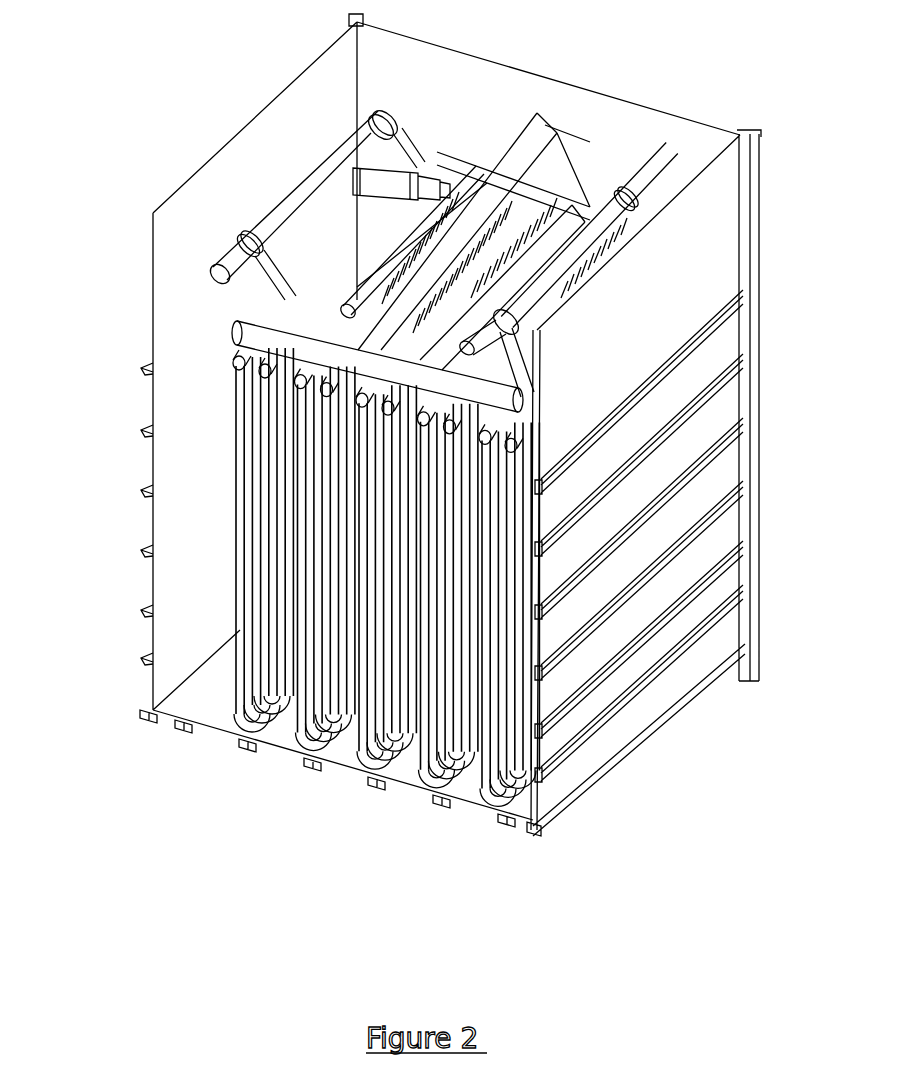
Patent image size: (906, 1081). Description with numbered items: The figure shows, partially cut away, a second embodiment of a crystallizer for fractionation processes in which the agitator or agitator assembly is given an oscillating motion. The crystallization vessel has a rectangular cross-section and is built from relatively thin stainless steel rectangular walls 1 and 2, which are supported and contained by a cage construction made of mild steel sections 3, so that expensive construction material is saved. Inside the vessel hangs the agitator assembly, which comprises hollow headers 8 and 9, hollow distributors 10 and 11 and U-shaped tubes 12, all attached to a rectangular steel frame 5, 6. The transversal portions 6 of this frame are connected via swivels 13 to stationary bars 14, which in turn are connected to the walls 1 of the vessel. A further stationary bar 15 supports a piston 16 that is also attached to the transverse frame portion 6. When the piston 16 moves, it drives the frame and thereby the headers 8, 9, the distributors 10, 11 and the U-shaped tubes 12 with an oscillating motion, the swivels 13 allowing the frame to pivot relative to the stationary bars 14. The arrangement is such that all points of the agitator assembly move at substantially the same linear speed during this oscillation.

The rectangular wall 1 is at (637, 130).
The rectangular wall 2 is at (718, 360).
The mild steel sections 3 is at (145, 368).
The frame 5 is at (455, 163).
The transversal portion of the frame 6 is at (332, 263).
The hollow header 8 is at (587, 207).
The hollow header 9 is at (250, 320).
The hollow distributor 10 is at (238, 418).
The hollow distributor 11 is at (228, 390).
The U-shaped tubes 12 is at (300, 738).
The swivel 13 is at (395, 100).
The stationary bar 14 is at (360, 135).
The further stationary bar 15 is at (537, 127).
The piston 16 is at (353, 175).